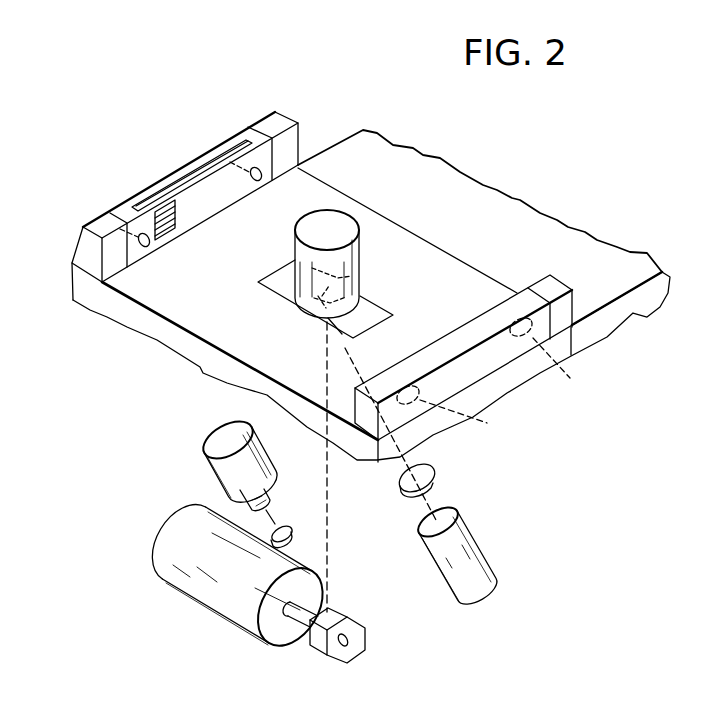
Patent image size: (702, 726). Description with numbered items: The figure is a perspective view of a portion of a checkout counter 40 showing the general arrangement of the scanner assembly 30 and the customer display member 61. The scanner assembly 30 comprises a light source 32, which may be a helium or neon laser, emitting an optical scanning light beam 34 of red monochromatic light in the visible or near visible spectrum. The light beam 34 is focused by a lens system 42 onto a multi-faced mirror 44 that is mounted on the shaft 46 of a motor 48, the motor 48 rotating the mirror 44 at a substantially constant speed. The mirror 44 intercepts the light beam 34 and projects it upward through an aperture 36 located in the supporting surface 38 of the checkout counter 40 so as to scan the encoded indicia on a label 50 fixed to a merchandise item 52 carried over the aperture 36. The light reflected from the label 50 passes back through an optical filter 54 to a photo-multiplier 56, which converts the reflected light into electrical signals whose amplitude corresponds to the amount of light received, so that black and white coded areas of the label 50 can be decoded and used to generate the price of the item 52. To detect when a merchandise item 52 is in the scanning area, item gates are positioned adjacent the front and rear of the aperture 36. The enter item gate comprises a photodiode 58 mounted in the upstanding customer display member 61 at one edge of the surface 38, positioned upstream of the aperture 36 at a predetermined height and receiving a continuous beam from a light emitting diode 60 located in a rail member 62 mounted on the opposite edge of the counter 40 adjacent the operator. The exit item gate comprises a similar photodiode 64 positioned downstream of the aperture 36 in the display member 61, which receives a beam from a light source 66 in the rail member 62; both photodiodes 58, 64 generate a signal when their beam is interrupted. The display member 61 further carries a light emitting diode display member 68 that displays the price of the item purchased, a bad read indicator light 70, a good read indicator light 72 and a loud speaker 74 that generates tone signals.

The scanner assembly 30 is at (94, 387).
The light source 32 is at (203, 447).
The optical scanning light beam 34 is at (330, 532).
The aperture 36 is at (270, 293).
The supporting surface 38 is at (443, 252).
The checkout counter 40 is at (617, 317).
The lens system 42 is at (283, 527).
The multi-faced mirror 44 is at (366, 640).
The shaft 46 is at (293, 622).
The motor 48 is at (170, 572).
The label 50 is at (355, 280).
The merchandise item 52 is at (360, 222).
The optical filter 54 is at (436, 474).
The photo-multiplier 56 is at (470, 540).
The photodiode 58 is at (261, 178).
The light emitting diode 60 is at (552, 353).
The customer display member 61 is at (165, 184).
The rail member 62 is at (573, 300).
The photodiode 64 is at (150, 246).
The light source 66 is at (454, 409).
The light emitting diode display member 68 is at (186, 175).
The bad read indicator light 70 is at (270, 124).
The good read indicator light 72 is at (98, 224).
The loud speaker 74 is at (176, 220).